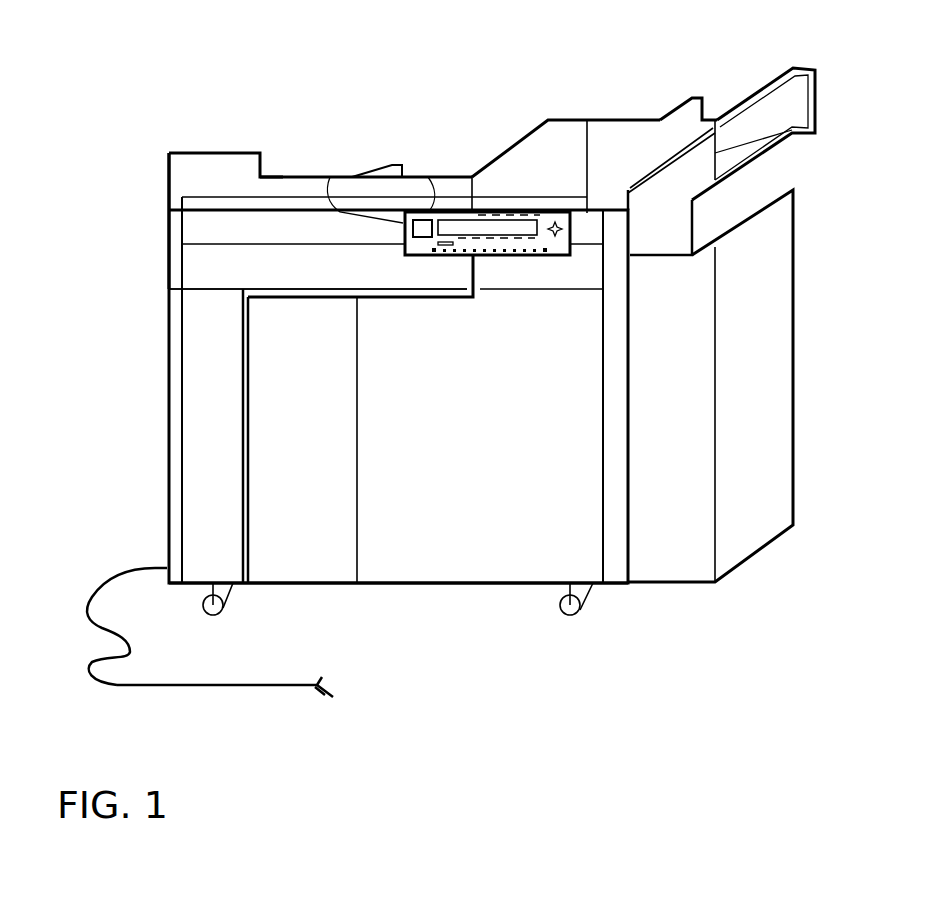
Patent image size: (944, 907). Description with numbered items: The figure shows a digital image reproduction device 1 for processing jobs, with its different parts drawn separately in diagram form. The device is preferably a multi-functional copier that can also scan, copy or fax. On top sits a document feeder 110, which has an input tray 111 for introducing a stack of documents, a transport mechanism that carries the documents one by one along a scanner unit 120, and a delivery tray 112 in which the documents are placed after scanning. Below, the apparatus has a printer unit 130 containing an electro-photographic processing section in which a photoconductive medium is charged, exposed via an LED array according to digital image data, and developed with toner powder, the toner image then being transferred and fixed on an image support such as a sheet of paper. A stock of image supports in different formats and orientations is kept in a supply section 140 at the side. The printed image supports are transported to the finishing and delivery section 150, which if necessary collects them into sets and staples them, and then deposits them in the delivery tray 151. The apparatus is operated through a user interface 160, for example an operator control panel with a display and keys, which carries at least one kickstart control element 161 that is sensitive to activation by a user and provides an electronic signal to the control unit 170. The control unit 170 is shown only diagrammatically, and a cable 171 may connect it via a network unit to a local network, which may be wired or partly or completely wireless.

The digital image reproduction device 1 is at (424, 96).
The document feeder 110 is at (208, 153).
The input tray 111 is at (283, 177).
The delivery tray 112 is at (515, 146).
The scanner unit 120 is at (168, 272).
The printer unit 130 is at (330, 588).
The supply section 140 is at (773, 545).
The finishing and delivery section 150 is at (607, 120).
The delivery tray 151 is at (767, 82).
The user interface 160 is at (428, 177).
The kickstart control element 161 is at (340, 178).
The control unit 170 is at (167, 477).
The cable 171 is at (270, 688).